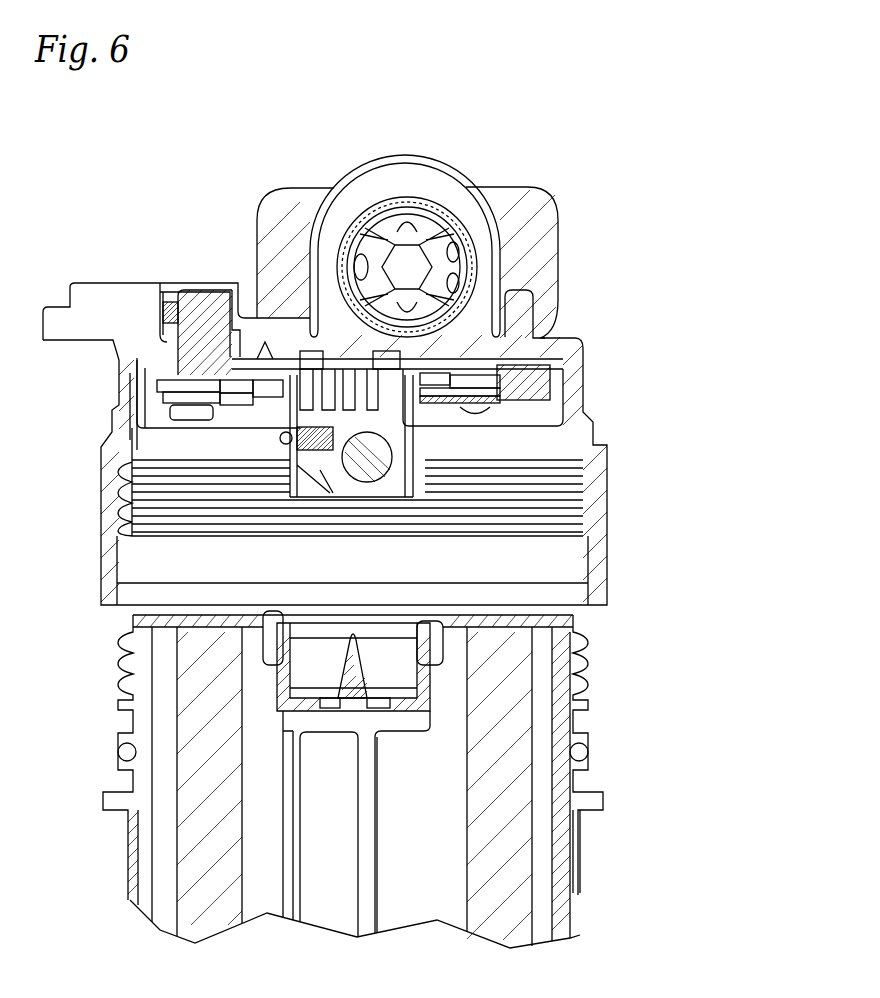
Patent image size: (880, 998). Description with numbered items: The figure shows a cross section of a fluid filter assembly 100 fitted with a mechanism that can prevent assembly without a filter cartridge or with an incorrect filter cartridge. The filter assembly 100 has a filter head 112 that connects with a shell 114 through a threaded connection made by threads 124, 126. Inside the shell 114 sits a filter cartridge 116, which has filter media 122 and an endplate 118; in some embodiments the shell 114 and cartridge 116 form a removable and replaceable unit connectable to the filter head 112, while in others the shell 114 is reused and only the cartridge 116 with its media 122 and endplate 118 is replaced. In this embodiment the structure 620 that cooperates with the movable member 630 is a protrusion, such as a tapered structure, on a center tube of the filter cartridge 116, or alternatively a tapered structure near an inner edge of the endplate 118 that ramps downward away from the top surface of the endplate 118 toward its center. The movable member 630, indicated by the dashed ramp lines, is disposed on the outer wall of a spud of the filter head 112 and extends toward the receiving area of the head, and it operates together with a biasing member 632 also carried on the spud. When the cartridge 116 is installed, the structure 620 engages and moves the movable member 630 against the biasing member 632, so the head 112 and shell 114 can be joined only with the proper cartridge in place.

The filter assembly 100 is at (640, 247).
The filter head 112 is at (598, 346).
The shell 114 is at (578, 852).
The filter cartridge 116 is at (628, 747).
The endplate 118 is at (98, 600).
The filter media 122 is at (572, 920).
The threads 124 is at (120, 706).
The threads 126 is at (114, 434).
The structure 620 is at (266, 611).
The movable member 630 is at (262, 300).
The biasing member 632 is at (300, 335).